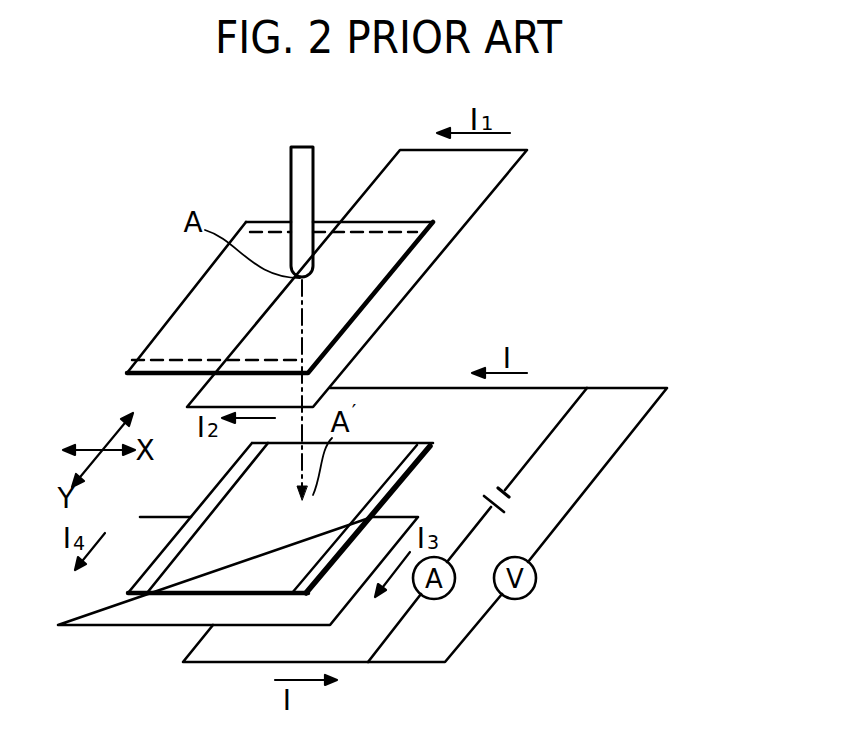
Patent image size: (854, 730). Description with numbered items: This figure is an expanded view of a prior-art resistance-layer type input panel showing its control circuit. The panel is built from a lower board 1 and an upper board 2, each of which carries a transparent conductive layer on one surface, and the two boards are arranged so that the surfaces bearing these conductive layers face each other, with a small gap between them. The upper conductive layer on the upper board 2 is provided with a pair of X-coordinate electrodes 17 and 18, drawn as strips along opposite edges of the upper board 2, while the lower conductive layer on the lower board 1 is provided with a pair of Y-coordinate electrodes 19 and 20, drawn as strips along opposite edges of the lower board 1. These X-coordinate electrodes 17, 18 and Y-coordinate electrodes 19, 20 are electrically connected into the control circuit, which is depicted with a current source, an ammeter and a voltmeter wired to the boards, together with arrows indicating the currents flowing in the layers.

The lower board 1 is at (414, 445).
The upper board 2 is at (257, 220).
The X-coordinate electrode 17 is at (126, 365).
The X-coordinate electrode 18 is at (384, 225).
The Y-coordinate electrode 19 is at (208, 497).
The Y-coordinate electrode 20 is at (428, 455).